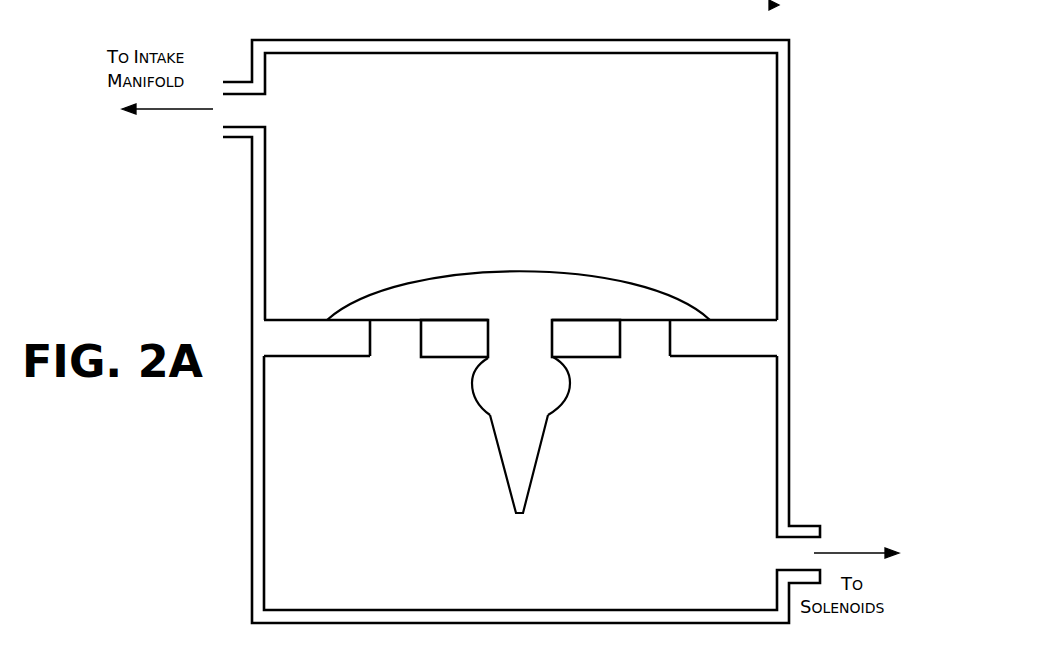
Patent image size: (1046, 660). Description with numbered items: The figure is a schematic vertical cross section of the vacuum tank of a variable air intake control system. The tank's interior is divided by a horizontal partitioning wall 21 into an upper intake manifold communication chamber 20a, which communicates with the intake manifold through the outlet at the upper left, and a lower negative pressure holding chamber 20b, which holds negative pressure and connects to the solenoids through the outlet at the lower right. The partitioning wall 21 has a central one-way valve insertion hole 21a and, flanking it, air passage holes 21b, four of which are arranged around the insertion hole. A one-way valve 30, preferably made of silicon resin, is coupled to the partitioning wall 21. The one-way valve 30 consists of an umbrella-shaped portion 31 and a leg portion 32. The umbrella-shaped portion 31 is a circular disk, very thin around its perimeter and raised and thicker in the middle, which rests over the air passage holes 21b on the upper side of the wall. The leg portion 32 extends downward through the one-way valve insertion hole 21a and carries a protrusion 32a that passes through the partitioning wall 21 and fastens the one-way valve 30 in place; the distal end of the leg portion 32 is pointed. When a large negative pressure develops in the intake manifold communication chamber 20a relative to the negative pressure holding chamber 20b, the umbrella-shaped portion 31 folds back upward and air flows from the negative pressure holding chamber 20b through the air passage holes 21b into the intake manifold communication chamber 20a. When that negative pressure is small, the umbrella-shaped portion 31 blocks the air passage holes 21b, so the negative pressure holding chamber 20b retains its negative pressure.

The intake manifold communication chamber 20a is at (753, 203).
The negative pressure holding chamber 20b is at (753, 459).
The partitioning wall 21 is at (327, 350).
The one-way valve insertion hole 21a is at (480, 372).
The air passage holes 21b is at (370, 342).
The one-way valve 30 is at (518, 392).
The umbrella-shaped portion 31 is at (645, 310).
The leg portion 32 is at (563, 435).
The protrusion 32a is at (560, 385).